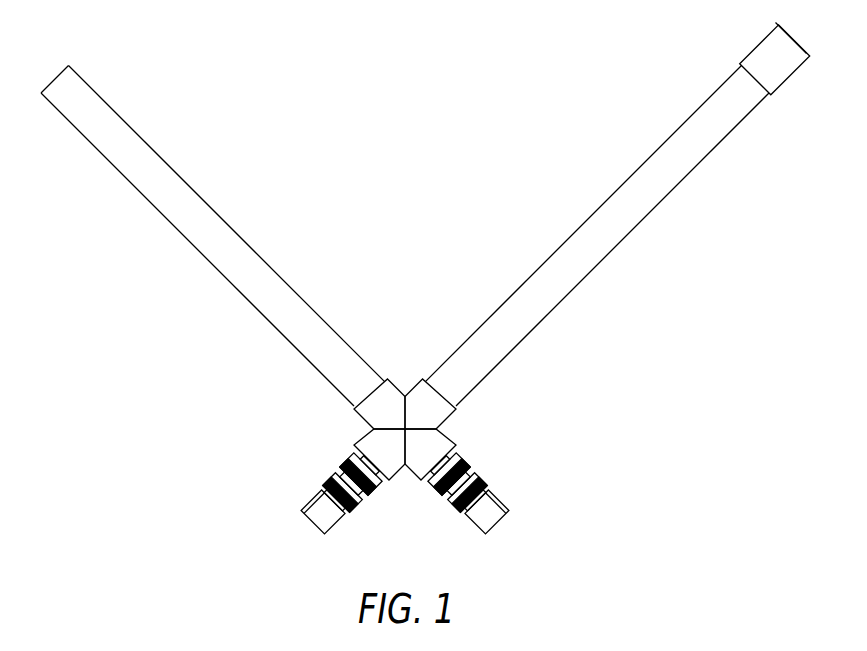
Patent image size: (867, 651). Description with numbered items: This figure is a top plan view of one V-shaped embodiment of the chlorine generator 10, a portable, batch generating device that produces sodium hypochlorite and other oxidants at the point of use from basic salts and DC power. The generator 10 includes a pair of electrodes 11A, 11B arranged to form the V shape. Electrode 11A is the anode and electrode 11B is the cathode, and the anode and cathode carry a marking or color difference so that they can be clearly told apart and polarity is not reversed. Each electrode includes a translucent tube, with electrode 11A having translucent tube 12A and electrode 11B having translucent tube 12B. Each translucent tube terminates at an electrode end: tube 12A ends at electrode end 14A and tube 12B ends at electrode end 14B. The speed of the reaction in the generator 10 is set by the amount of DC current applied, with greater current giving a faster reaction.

The chlorine generator 10 is at (574, 45).
The electrode 11A is at (213, 236).
The electrode 11B is at (617, 215).
The translucent tube 12A is at (131, 127).
The translucent tube 12B is at (673, 133).
The electrode end 14A is at (309, 498).
The electrode end 14B is at (501, 498).